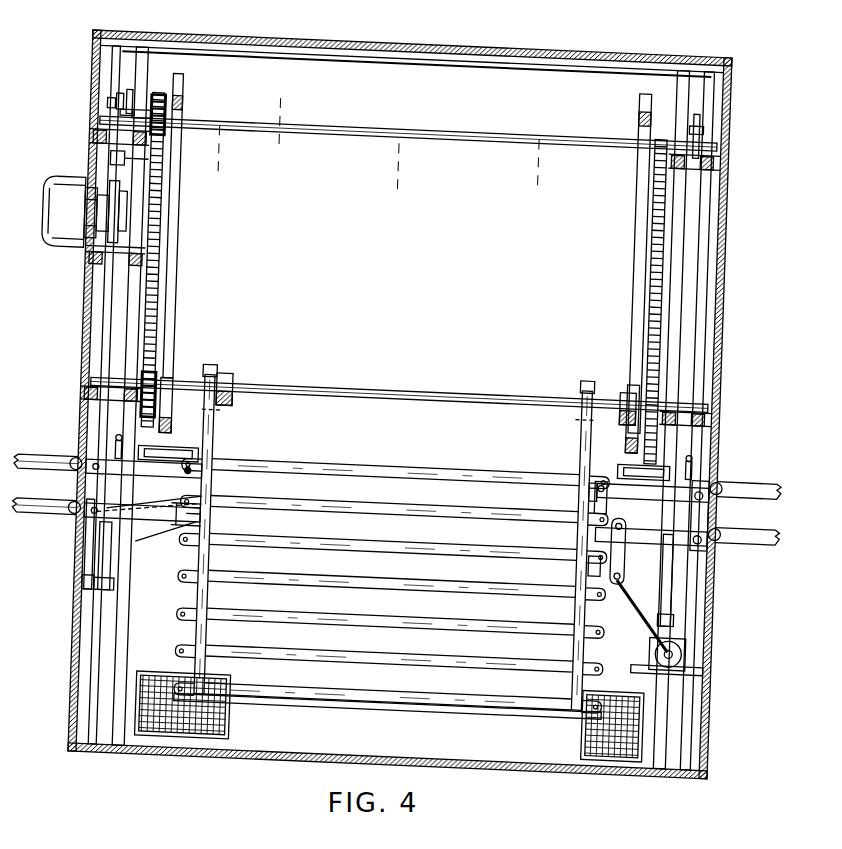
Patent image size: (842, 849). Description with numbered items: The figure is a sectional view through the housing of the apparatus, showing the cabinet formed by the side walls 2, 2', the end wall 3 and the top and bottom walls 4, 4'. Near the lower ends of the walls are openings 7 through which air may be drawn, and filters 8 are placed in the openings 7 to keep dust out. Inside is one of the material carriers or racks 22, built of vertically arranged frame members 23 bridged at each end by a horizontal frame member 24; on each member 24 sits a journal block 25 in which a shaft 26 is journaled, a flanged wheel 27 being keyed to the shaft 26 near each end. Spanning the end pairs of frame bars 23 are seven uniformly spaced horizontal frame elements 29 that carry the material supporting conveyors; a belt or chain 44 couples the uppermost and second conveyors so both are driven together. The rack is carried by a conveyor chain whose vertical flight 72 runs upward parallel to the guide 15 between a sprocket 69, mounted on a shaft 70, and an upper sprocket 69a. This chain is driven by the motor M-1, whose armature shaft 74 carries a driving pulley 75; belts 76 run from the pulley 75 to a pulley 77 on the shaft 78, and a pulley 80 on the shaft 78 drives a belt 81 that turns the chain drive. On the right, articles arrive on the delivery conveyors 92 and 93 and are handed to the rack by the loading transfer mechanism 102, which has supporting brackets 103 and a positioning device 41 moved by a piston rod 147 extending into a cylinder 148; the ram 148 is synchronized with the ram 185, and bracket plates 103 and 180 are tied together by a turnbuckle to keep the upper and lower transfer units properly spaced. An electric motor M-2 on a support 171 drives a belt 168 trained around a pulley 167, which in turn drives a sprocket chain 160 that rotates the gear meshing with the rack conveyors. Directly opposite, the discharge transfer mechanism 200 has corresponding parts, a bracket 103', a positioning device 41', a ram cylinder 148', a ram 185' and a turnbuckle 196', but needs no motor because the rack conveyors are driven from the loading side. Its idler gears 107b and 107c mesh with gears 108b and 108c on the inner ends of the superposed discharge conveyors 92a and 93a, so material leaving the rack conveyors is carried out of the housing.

The top wall 4 is at (412, 39).
The bottom wall 4' is at (387, 780).
The side wall 2 is at (722, 418).
The side wall 2' is at (87, 390).
The shaft 70 is at (107, 395).
The guide 15 is at (407, 253).
The vertical flight 72 is at (427, 280).
The sprocket 69a is at (180, 99).
The pulley 77 is at (125, 87).
The belt 81 is at (87, 84).
The pulley 80 is at (377, 115).
The shaft 78 is at (195, 87).
The belts 76 is at (105, 150).
The motor M-1 is at (63, 202).
The armature shaft 74 is at (98, 202).
The driving pulley 75 is at (115, 258).
The end wall 3 is at (358, 235).
The shaft 26 is at (110, 361).
The sprocket 69 is at (390, 379).
The flanged wheel 27 is at (400, 387).
The journal block 25 is at (399, 358).
The horizontal frame member 24 is at (398, 414).
The vertical frame members 23 is at (393, 542).
The horizontal frame elements 29 is at (350, 419).
The rack 22 is at (386, 727).
The openings 7 is at (486, 681).
The filters 8 is at (576, 725).
The discharge conveyor 92a is at (47, 441).
The discharge conveyor 93a is at (44, 529).
The gear 108c is at (61, 441).
The gear 108b is at (54, 497).
The idler gear 107c is at (0, 447).
The idler gear 107b is at (121, 532).
The bracket plate 180 is at (398, 446).
The ram 185' is at (172, 441).
The turnbuckle device 196' is at (174, 494).
The positioning device 41' is at (209, 516).
The supporting bracket 103' is at (131, 556).
The discharge transfer mechanism 200 is at (165, 541).
The cylinder 148' is at (63, 544).
The delivery conveyor 92 is at (746, 473).
The delivery conveyor 93 is at (746, 522).
The supporting brackets 103 is at (670, 514).
The piston rod 147 is at (672, 547).
The belt or chain 44 is at (604, 474).
The ram 185 is at (644, 456).
The positioning device 41 is at (574, 494).
The sprocket chain 160 is at (583, 549).
The pulley 167 is at (572, 568).
The driving belt 168 is at (641, 616).
The cylinder 148 is at (703, 582).
The electric motor M-2 is at (704, 638).
The support 171 is at (695, 649).
The loading transfer mechanism 102 is at (647, 419).